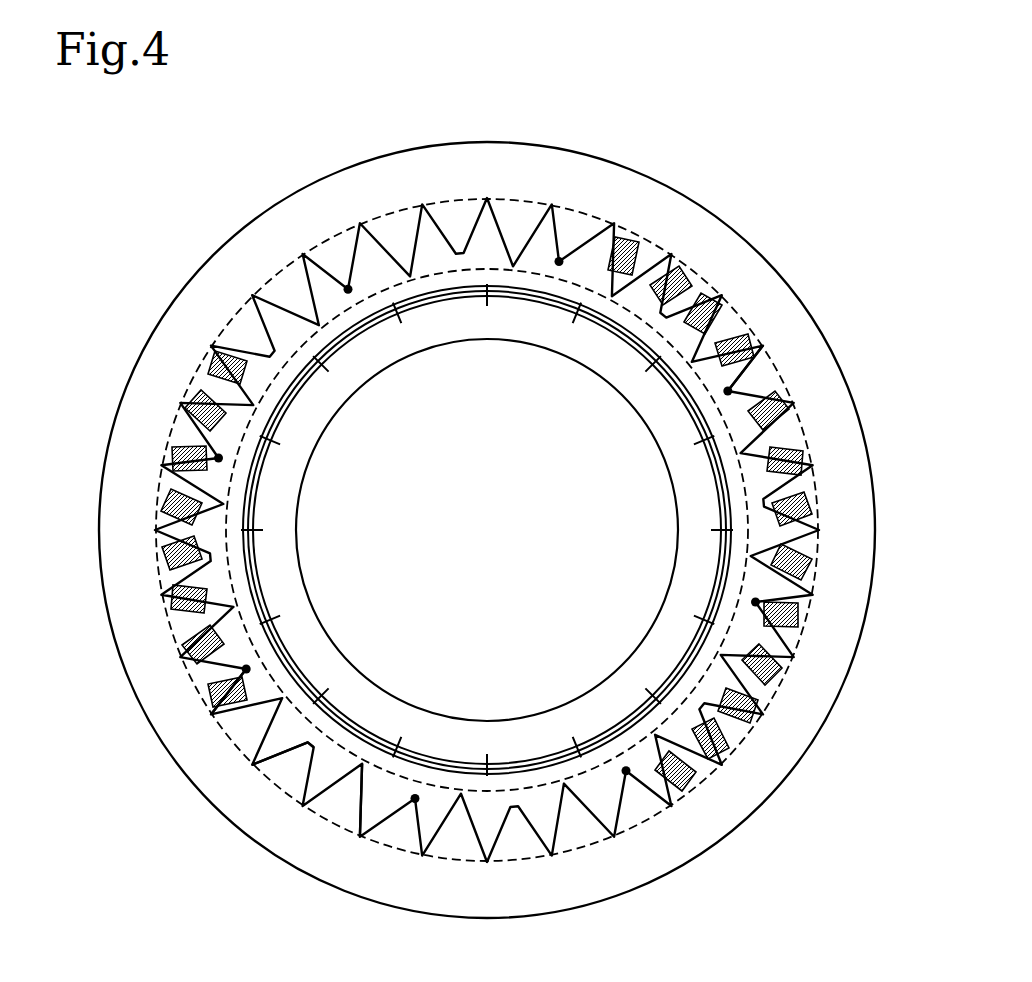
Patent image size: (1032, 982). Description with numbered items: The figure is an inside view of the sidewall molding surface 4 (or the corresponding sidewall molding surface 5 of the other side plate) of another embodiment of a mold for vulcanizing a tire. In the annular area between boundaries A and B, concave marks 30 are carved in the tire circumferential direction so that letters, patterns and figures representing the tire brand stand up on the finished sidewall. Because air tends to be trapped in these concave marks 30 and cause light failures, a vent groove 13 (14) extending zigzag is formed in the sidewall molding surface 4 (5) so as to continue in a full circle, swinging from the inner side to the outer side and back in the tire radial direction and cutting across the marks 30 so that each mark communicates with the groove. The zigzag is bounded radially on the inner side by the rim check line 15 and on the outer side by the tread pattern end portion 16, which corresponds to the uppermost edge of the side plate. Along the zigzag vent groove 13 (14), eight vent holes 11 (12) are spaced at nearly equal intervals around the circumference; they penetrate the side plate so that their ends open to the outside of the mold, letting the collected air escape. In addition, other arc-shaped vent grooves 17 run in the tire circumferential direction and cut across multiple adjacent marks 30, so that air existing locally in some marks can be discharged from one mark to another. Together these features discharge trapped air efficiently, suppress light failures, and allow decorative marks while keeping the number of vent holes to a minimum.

The sidewall molding surface 4 is at (487, 527).
The sidewall molding surface 5 is at (487, 527).
The vent hole 11 is at (487, 539).
The vent hole 12 is at (559, 262).
The vent groove 13 is at (487, 468).
The vent groove 14 is at (497, 215).
The rim check line 15 is at (533, 762).
The tread pattern end portion 16 is at (642, 890).
The other vent groove 17 is at (760, 383).
The concave mark 30 is at (733, 330).
The area boundary A is at (337, 832).
The area boundary B is at (342, 755).